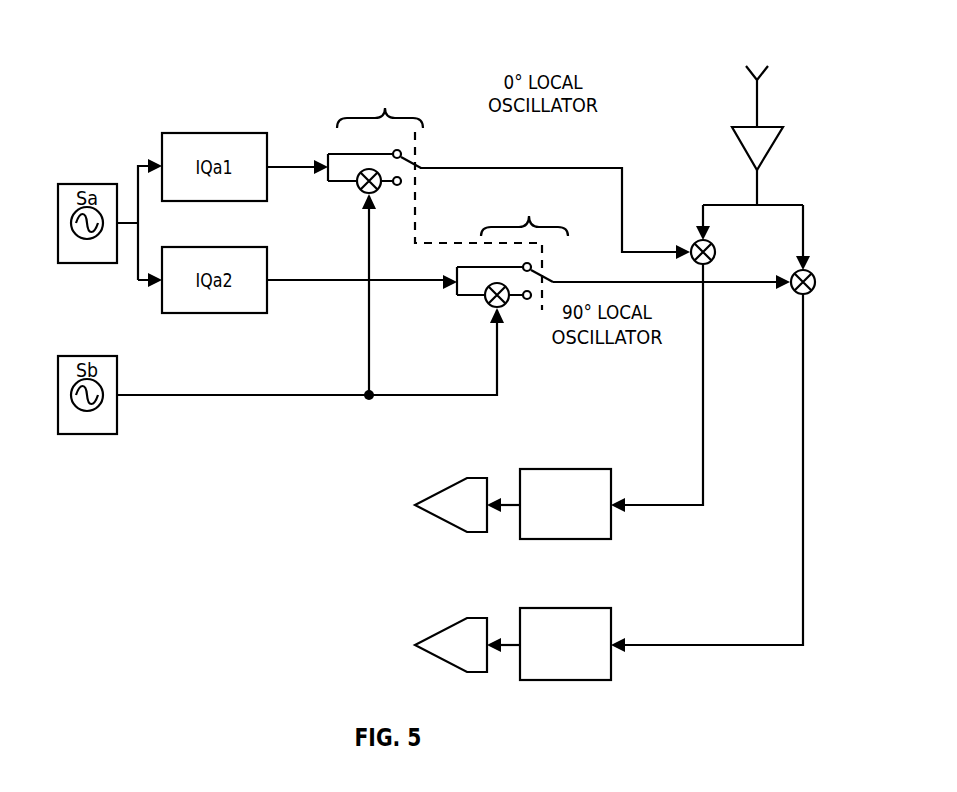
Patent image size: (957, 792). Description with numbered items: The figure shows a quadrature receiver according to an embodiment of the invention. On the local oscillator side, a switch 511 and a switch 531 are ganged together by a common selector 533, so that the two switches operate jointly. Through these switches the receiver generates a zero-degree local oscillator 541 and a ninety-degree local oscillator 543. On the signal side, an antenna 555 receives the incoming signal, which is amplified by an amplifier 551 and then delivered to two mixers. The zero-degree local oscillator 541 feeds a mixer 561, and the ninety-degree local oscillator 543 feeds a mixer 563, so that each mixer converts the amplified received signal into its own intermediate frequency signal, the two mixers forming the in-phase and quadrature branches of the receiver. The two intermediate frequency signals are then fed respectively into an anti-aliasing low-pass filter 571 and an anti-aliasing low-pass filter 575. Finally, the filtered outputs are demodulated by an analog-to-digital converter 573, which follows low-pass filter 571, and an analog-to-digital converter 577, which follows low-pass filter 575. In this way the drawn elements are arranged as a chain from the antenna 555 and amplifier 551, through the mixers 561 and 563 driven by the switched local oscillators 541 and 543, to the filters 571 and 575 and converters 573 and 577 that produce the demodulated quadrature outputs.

The switch 511 is at (375, 132).
The switch 531 is at (512, 244).
The common selector 533 is at (415, 222).
The 0° local oscillator 541 is at (543, 167).
The 90° local oscillator 543 is at (622, 281).
The amplifier 551 is at (753, 145).
The antenna 555 is at (753, 97).
The mixer 561 is at (712, 247).
The mixer 563 is at (797, 297).
The anti-aliasing low-pass filter 571 is at (564, 469).
The analog-to-digital converter 573 is at (480, 532).
The anti-aliasing low-pass filter 575 is at (563, 680).
The analog-to-digital converter 577 is at (480, 672).